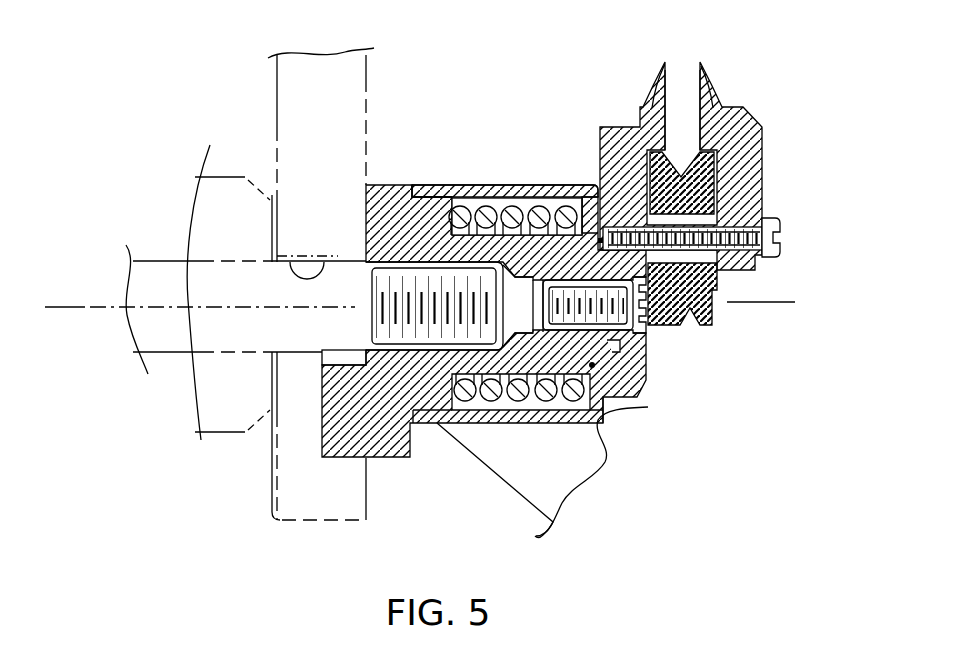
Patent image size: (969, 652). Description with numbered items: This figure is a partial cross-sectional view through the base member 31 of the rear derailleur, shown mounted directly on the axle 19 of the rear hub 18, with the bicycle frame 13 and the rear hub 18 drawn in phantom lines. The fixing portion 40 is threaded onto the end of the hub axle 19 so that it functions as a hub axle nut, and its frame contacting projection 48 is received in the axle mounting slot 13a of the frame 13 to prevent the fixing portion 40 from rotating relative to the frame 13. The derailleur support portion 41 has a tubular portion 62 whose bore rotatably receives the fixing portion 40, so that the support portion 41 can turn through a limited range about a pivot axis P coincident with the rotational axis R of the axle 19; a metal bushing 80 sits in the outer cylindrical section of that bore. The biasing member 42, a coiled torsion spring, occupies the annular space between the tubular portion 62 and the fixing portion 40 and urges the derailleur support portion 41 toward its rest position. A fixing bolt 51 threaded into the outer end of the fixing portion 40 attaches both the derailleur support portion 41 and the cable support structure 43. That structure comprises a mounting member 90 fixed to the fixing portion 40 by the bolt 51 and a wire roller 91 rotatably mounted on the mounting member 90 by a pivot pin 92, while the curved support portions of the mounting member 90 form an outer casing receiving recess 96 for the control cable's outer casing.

The bicycle frame 13 is at (366, 73).
The axle mounting slot 13a is at (330, 258).
The rear hub 18 is at (228, 177).
The axle 19 is at (159, 261).
The base member 31 is at (517, 55).
The fixing portion 40 is at (401, 472).
The derailleur support portion 41 is at (470, 473).
The biasing member 42 is at (519, 408).
The cable support structure 43 is at (742, 85).
The frame contacting projection 48 is at (330, 458).
The fixing bolt 51 is at (647, 333).
The tubular portion 62 is at (482, 185).
The metal bushing 80 is at (615, 445).
The mounting member 90 is at (742, 110).
The wire roller 91 is at (717, 292).
The pivot pin 92 is at (772, 221).
The outer casing receiving recess 96 is at (684, 56).
The rotational axis R is at (66, 312).
The pivot axis P is at (745, 303).